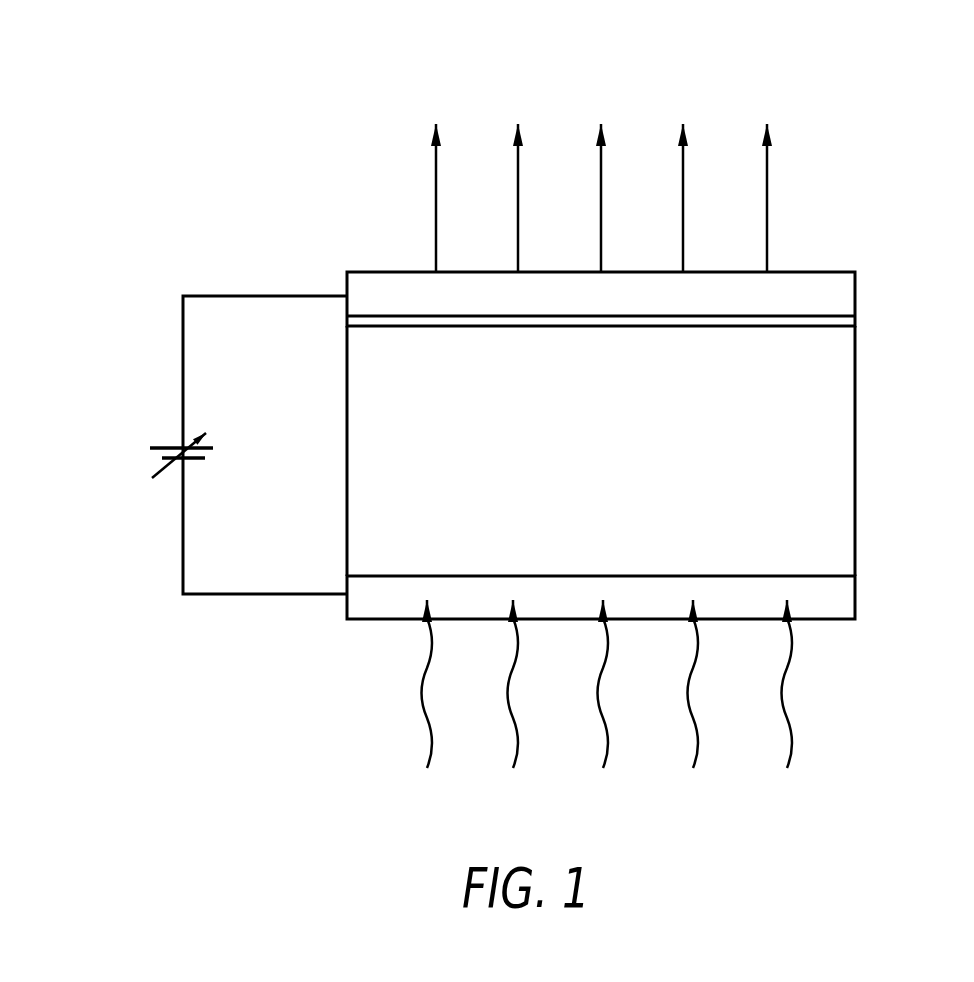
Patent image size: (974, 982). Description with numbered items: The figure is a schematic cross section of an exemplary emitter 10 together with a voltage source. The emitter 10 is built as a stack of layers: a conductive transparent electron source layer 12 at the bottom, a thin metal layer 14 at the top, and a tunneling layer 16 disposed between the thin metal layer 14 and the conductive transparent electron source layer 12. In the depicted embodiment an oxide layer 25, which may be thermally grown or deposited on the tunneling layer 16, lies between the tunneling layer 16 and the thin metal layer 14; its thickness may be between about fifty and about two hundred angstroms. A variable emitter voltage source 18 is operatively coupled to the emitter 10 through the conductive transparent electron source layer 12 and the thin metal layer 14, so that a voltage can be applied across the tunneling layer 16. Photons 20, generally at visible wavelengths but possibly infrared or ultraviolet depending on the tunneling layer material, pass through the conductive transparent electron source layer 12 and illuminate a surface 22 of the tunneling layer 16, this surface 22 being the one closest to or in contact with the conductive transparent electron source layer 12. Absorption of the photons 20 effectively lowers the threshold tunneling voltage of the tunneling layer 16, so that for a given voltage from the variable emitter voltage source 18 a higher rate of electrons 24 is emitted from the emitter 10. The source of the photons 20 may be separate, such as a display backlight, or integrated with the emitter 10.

The emitter 10 is at (864, 86).
The conductive transparent electron source layer 12 is at (857, 600).
The thin metal layer 14 is at (857, 295).
The tunneling layer 16 is at (857, 448).
The variable emitter voltage source 18 is at (163, 424).
The photons 20 is at (857, 728).
The surface 22 is at (389, 590).
The electrons 24 is at (857, 207).
The oxide layer 25 is at (857, 322).